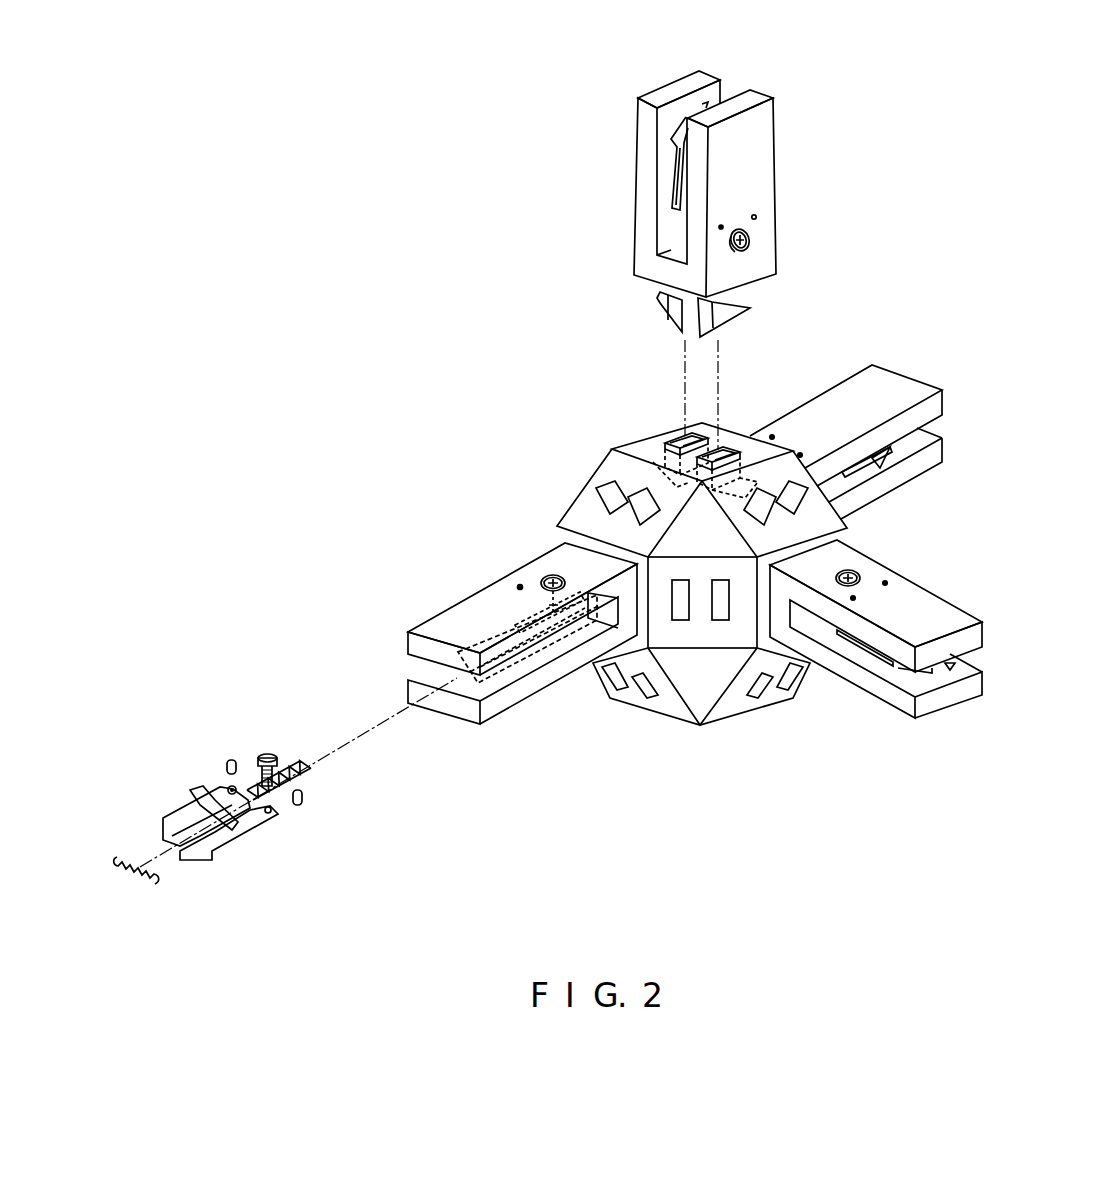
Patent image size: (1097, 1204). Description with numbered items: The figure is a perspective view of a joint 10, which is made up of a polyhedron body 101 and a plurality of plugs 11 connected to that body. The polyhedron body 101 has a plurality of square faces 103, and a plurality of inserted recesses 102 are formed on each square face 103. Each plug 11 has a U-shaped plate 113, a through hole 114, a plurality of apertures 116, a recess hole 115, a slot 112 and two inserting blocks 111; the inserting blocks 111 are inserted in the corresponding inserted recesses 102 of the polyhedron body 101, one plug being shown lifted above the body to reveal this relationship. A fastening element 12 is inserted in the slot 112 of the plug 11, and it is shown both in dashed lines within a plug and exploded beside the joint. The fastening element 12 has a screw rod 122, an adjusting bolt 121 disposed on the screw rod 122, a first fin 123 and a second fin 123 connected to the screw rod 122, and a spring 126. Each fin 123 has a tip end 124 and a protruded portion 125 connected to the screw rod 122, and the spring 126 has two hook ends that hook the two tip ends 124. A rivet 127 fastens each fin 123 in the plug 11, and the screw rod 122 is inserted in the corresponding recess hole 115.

The joint 10 is at (514, 406).
The plug 11 is at (613, 76).
The fastening element 12 is at (538, 655).
The polyhedron body 101 is at (692, 683).
The inserted recess 102 is at (675, 442).
The square face 103 is at (640, 450).
The inserting block 111 is at (730, 320).
The slot 112 is at (736, 82).
The U-shaped plate 113 is at (677, 256).
The through hole 114 is at (742, 250).
The recess hole 115 is at (590, 598).
The aperture 116 is at (757, 215).
The adjusting bolt 121 is at (268, 753).
The screw rod 122 is at (307, 772).
The fin 123 is at (200, 810).
The tip end 124 is at (172, 817).
The protruded portion 125 is at (257, 810).
The spring 126 is at (137, 888).
The rivet 127 is at (230, 757).